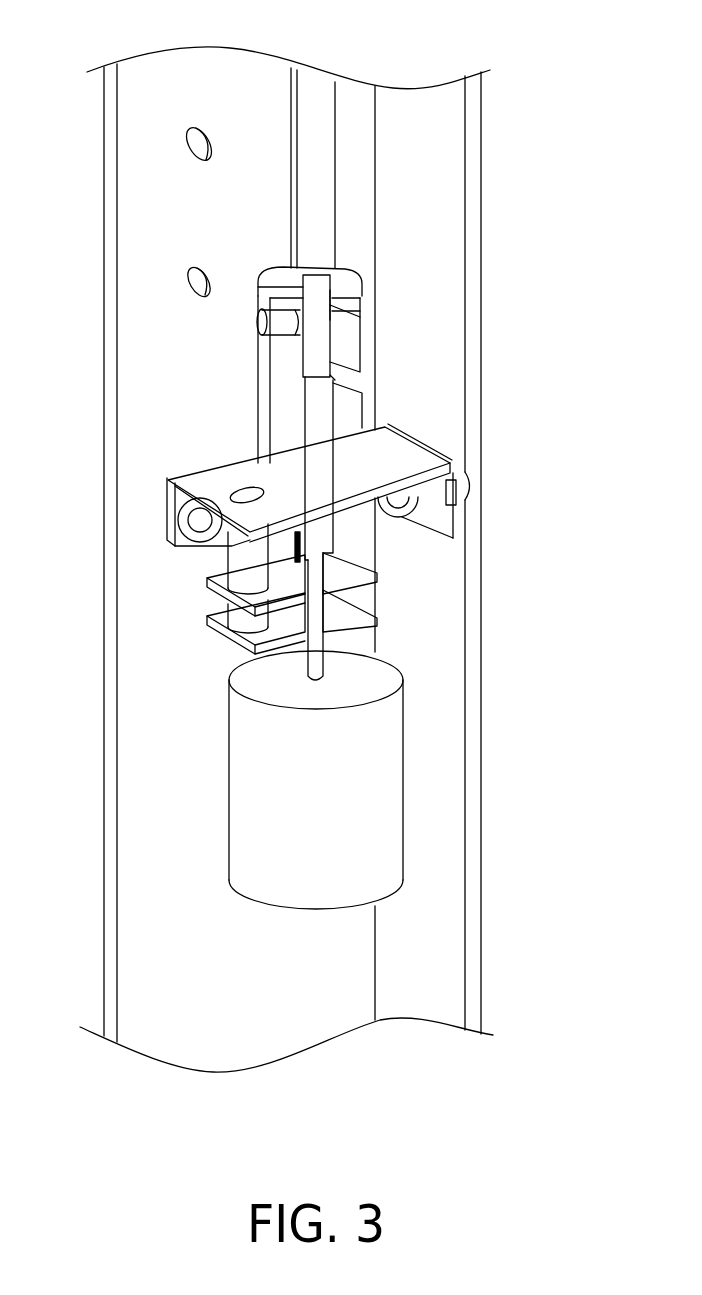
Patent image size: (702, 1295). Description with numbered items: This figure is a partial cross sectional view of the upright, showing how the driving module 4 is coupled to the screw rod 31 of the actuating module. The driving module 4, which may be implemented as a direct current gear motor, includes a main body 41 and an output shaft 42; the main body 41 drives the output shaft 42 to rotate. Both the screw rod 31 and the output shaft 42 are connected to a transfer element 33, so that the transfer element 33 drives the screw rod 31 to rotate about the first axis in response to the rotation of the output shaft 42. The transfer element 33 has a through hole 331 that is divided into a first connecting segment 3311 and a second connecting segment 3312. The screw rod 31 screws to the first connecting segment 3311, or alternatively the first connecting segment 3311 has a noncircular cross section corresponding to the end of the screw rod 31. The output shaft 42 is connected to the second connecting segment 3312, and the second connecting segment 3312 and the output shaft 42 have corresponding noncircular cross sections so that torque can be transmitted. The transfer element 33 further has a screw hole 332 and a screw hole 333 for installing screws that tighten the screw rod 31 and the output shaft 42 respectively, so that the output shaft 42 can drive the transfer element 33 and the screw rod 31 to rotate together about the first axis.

The screw rod 31 is at (312, 88).
The transfer element 33 is at (275, 280).
The through hole 331 is at (332, 268).
The first connecting segment 3311 is at (354, 300).
The second connecting segment 3312 is at (354, 381).
The screw hole 332 is at (275, 328).
The screw hole 333 is at (215, 478).
The driving module 4 is at (402, 731).
The main body 41 is at (533, 652).
The output shaft 42 is at (315, 665).